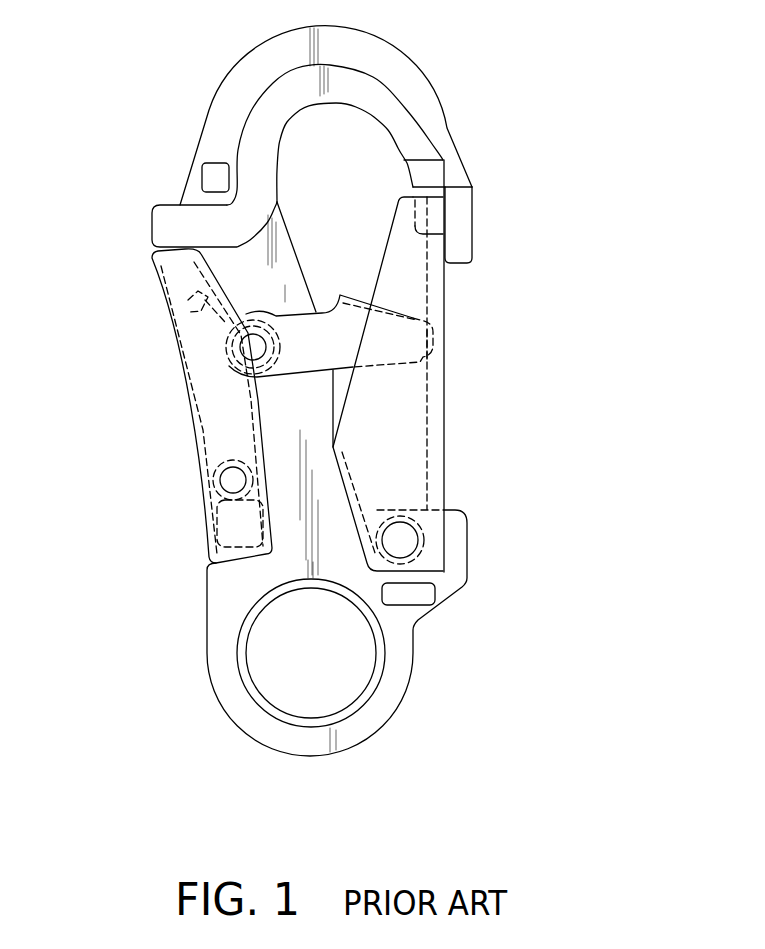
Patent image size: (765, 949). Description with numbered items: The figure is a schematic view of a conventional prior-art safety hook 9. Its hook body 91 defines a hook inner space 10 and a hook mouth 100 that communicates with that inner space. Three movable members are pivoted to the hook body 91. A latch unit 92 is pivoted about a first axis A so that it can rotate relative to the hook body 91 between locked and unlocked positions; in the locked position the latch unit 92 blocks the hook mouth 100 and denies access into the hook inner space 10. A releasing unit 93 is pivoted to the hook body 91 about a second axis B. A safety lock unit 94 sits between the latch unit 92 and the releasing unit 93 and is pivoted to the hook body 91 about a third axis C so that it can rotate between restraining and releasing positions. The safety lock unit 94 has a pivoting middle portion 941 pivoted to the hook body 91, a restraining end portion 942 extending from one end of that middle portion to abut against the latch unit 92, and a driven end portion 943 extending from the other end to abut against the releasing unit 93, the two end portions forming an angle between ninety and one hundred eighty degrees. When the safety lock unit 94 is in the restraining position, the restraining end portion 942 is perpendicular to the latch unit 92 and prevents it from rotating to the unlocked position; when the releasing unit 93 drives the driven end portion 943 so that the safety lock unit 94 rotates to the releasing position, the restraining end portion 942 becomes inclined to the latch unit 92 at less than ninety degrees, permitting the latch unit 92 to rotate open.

The hook mouth 100 is at (487, 388).
The safety hook 9 is at (230, 63).
The hook inner space 10 is at (351, 171).
The latch unit 92 is at (448, 418).
The hook body 91 is at (222, 745).
The releasing unit 93 is at (200, 540).
The safety lock unit 94 is at (350, 287).
The pivoting middle portion 941 is at (317, 332).
The restraining end portion 942 is at (423, 342).
The driven end portion 943 is at (180, 317).
The first axis A is at (400, 540).
The second axis B is at (232, 480).
The third axis C is at (250, 347).